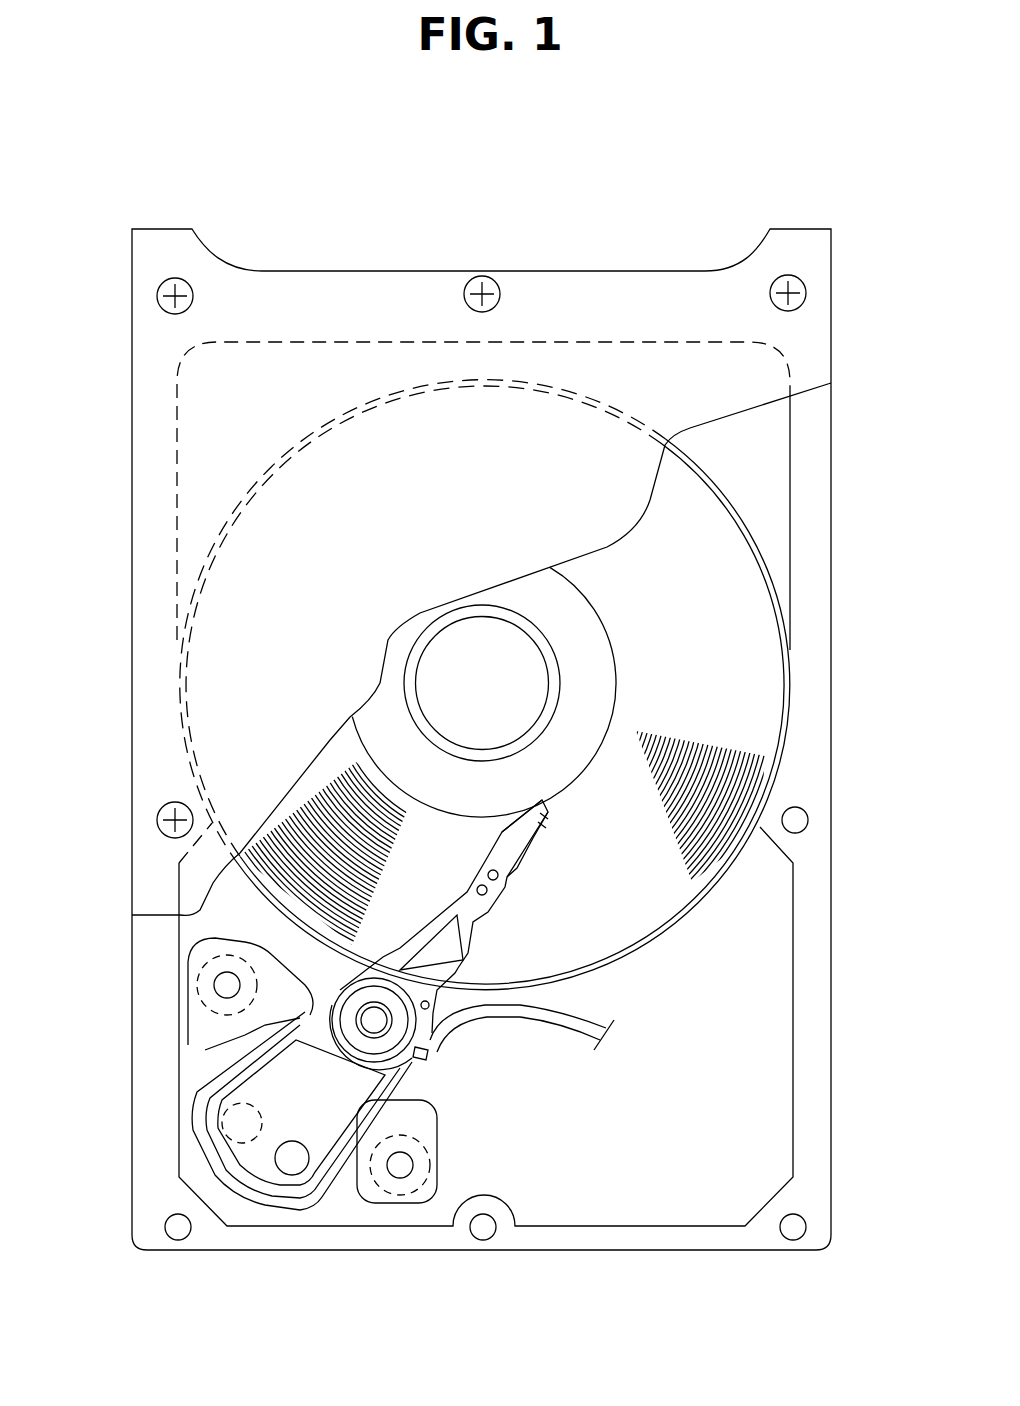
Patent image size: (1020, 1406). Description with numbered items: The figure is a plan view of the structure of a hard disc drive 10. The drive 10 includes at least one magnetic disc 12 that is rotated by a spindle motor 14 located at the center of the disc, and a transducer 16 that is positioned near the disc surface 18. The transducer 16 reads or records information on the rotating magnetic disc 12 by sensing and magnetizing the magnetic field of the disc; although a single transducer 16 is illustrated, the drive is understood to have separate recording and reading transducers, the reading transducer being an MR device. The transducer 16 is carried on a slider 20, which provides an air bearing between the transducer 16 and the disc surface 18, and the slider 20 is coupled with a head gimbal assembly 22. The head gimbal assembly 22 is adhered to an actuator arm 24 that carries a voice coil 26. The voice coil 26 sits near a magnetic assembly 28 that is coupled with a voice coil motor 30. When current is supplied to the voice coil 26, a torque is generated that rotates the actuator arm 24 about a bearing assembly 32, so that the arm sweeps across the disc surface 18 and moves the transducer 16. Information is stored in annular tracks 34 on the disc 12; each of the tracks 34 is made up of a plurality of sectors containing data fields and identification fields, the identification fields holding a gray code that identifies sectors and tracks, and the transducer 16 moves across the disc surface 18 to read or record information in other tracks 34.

The hard disc drive 10 is at (692, 208).
The magnetic disc 12 is at (750, 615).
The spindle motor 14 is at (457, 660).
The transducer 16 is at (550, 818).
The disc surface 18 is at (680, 687).
The slider 20 is at (538, 829).
The head gimbal assembly 22 is at (495, 914).
The actuator arm 24 is at (263, 1032).
The voice coil 26 is at (217, 1113).
The magnetic assembly 28 is at (222, 1053).
The voice coil motor 30 is at (342, 1208).
The bearing assembly 32 is at (388, 1033).
The tracks 34 is at (338, 808).